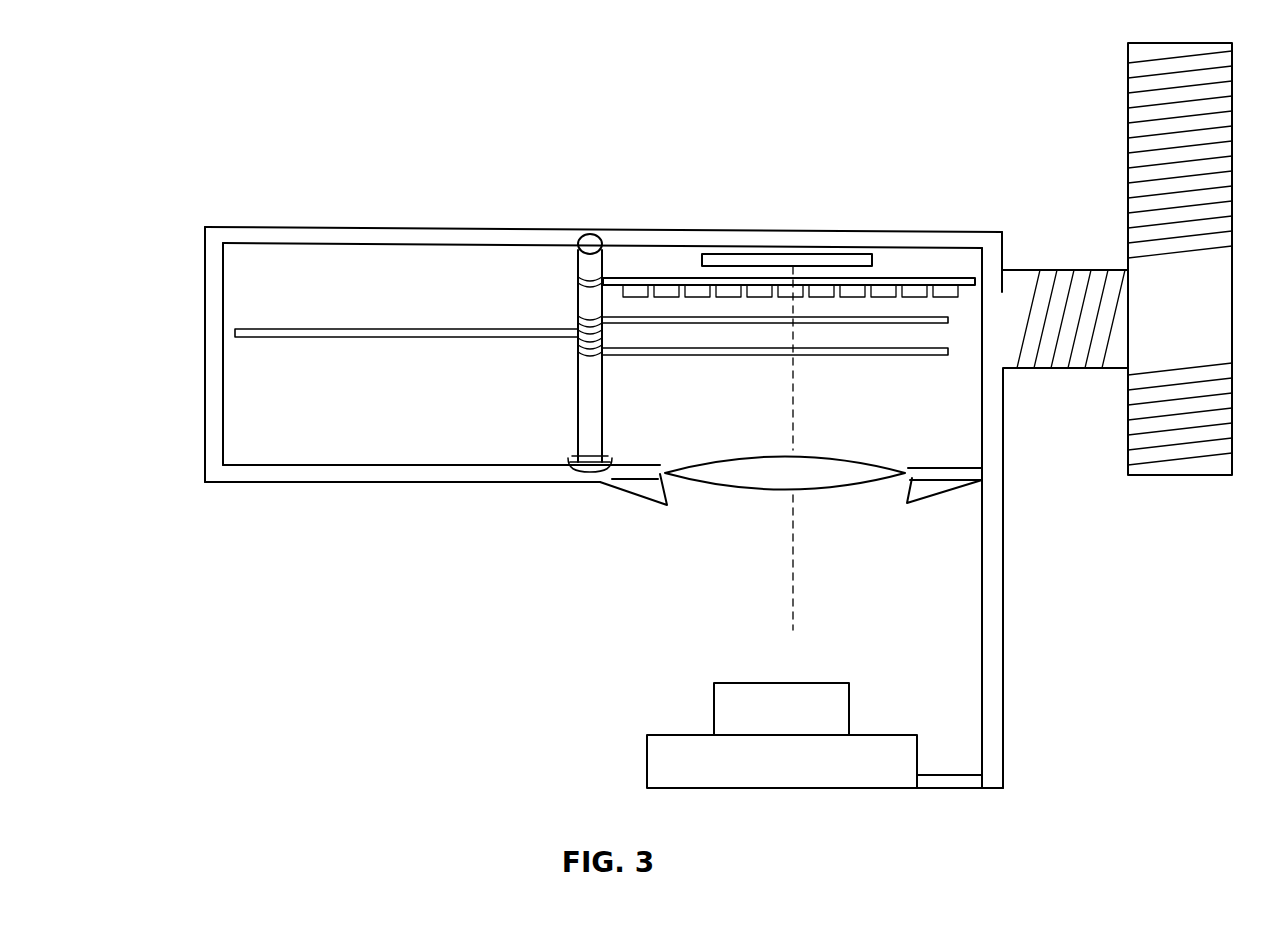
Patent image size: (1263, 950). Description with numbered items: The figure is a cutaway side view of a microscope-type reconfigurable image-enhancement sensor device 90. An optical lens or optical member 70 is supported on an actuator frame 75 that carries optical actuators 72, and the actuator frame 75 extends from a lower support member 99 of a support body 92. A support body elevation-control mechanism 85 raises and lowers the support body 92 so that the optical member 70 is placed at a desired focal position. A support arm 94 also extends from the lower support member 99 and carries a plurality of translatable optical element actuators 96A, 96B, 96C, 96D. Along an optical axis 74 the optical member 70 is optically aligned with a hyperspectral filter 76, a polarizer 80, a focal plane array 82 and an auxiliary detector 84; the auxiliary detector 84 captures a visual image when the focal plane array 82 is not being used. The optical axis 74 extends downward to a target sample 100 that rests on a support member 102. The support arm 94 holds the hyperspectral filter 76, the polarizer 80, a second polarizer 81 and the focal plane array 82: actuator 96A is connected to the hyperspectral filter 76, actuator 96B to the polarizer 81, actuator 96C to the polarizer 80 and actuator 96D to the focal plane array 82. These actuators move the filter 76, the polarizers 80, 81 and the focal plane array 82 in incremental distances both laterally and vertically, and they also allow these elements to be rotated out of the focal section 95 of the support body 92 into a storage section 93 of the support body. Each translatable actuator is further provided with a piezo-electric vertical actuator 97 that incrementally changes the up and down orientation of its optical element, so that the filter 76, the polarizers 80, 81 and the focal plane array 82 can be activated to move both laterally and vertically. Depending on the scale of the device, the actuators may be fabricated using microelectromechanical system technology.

The reconfigurable image-enhancement sensor device 90 is at (403, 212).
The support body 92 is at (205, 425).
The storage section 93 is at (362, 432).
The lower support member 99 is at (468, 477).
The focal section 95 is at (952, 418).
The piezo-electric vertical actuator 97 is at (992, 607).
The support body elevation-control mechanism 85 is at (1133, 155).
The auxiliary detector 84 is at (768, 257).
The focal plane array 82 is at (905, 278).
The polarizer 80 is at (740, 323).
The hyperspectral filter 76 is at (860, 355).
The polarizer 81 is at (448, 338).
The support arm 94 is at (585, 418).
The translatable optical element actuator 96A is at (578, 350).
The translatable optical element actuator 96B is at (578, 330).
The translatable optical element actuator 96C is at (603, 317).
The translatable optical element actuator 96D is at (558, 248).
The optical member 70 is at (768, 491).
The optical axis 74 is at (800, 614).
The actuator frame 75 is at (640, 489).
The optical actuators 72 is at (907, 500).
The target sample 100 is at (714, 708).
The support member 102 is at (647, 765).